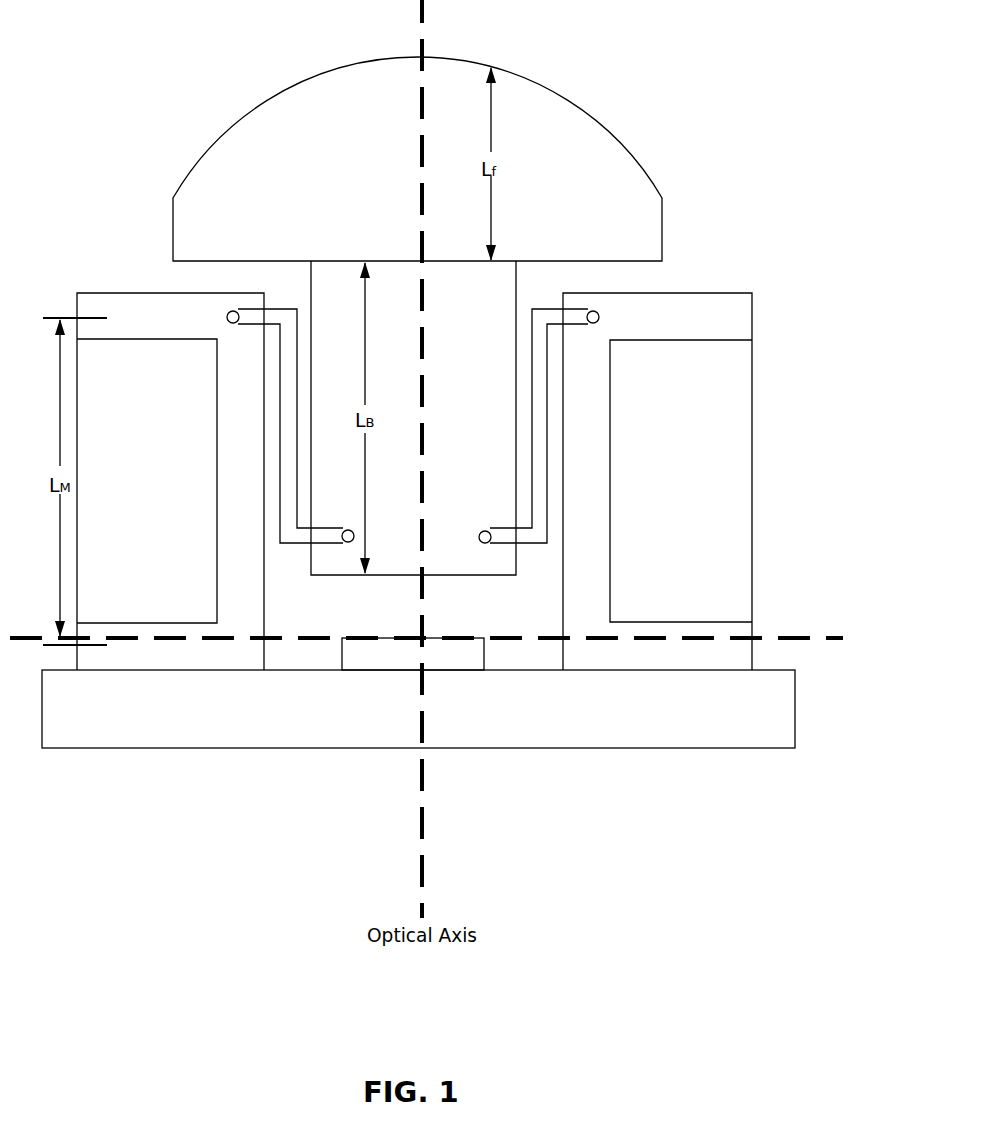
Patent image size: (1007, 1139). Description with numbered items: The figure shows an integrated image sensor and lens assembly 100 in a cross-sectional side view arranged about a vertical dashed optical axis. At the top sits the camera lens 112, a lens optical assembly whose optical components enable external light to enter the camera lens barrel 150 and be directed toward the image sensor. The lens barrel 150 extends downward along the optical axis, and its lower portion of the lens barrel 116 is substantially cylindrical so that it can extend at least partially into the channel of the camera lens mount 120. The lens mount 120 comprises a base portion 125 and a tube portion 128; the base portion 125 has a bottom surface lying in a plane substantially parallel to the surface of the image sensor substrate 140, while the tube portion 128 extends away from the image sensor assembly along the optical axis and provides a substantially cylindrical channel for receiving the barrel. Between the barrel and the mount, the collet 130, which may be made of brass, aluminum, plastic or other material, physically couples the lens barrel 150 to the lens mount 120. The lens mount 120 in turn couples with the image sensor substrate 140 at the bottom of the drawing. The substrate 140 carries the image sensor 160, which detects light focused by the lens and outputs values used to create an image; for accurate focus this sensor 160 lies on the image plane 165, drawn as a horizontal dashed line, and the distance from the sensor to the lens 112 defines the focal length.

The integrated image sensor and lens assembly 100 is at (80, 19).
The camera lens 112 is at (584, 104).
The lower portion of the lens barrel 116 is at (335, 292).
The camera lens mount 120 is at (615, 432).
The base portion 125 is at (137, 657).
The tube portion 128 is at (230, 447).
The collet 130 is at (550, 466).
The image sensor substrate 140 is at (242, 752).
The camera lens barrel 150 is at (341, 579).
The image sensor 160 is at (461, 655).
The image plane 165 is at (688, 642).